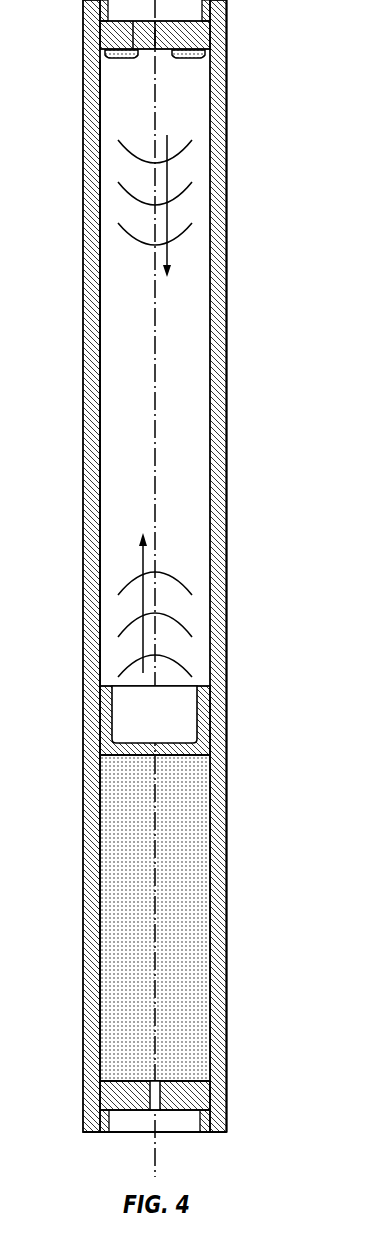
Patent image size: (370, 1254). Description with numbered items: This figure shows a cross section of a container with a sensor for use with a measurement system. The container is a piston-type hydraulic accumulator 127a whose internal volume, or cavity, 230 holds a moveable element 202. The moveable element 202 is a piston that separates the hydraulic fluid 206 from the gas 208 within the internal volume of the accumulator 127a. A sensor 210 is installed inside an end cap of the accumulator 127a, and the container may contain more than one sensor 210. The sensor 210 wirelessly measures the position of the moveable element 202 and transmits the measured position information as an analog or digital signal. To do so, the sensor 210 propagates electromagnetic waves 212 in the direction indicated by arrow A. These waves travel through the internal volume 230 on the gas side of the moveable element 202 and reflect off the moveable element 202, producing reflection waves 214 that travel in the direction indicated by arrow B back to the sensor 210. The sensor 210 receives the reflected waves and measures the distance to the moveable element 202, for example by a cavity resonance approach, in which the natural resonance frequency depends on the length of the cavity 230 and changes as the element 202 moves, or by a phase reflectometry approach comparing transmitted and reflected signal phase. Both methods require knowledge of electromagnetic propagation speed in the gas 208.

The hydraulic accumulator 127a is at (227, 204).
The moveable element 202 is at (202, 703).
The hydraulic fluid 206 is at (190, 838).
The gas 208 is at (198, 358).
The sensor 210 is at (121, 58).
The electromagnetic waves 212 is at (128, 234).
The reflection waves 214 is at (128, 665).
The internal volume 230 is at (108, 318).
The arrow A is at (168, 172).
The arrow B is at (140, 562).